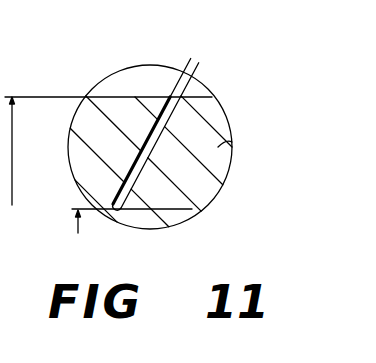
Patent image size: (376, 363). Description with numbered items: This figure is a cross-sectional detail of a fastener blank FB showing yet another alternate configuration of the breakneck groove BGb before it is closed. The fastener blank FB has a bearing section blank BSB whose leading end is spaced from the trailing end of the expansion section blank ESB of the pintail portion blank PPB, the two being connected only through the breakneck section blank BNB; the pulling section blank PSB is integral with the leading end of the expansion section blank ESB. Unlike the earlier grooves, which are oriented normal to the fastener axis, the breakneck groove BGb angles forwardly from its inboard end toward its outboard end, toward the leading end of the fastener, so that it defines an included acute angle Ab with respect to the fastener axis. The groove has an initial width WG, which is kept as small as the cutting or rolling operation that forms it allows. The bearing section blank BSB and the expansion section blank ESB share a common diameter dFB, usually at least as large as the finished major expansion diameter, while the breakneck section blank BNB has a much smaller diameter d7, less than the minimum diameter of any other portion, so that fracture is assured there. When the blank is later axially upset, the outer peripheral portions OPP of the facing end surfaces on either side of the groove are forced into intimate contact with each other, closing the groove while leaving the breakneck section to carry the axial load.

The bearing section blank BSB is at (90, 107).
The fastener blank FB is at (123, 92).
The width of the breakneck groove WG is at (168, 50).
The outer peripheral portions OPP is at (180, 122).
The breakneck groove BGb is at (139, 164).
The expansion section blank ESB is at (232, 142).
The pulling section blank PSB is at (86, 166).
The pintail portion blank PPB is at (229, 175).
The included acute angle Ab is at (164, 155).
The breakneck section blank BNB is at (119, 214).
The common diameter of the bearing and expansion section blanks dFB is at (16, 163).
The diameter of the breakneck section d7 is at (132, 235).